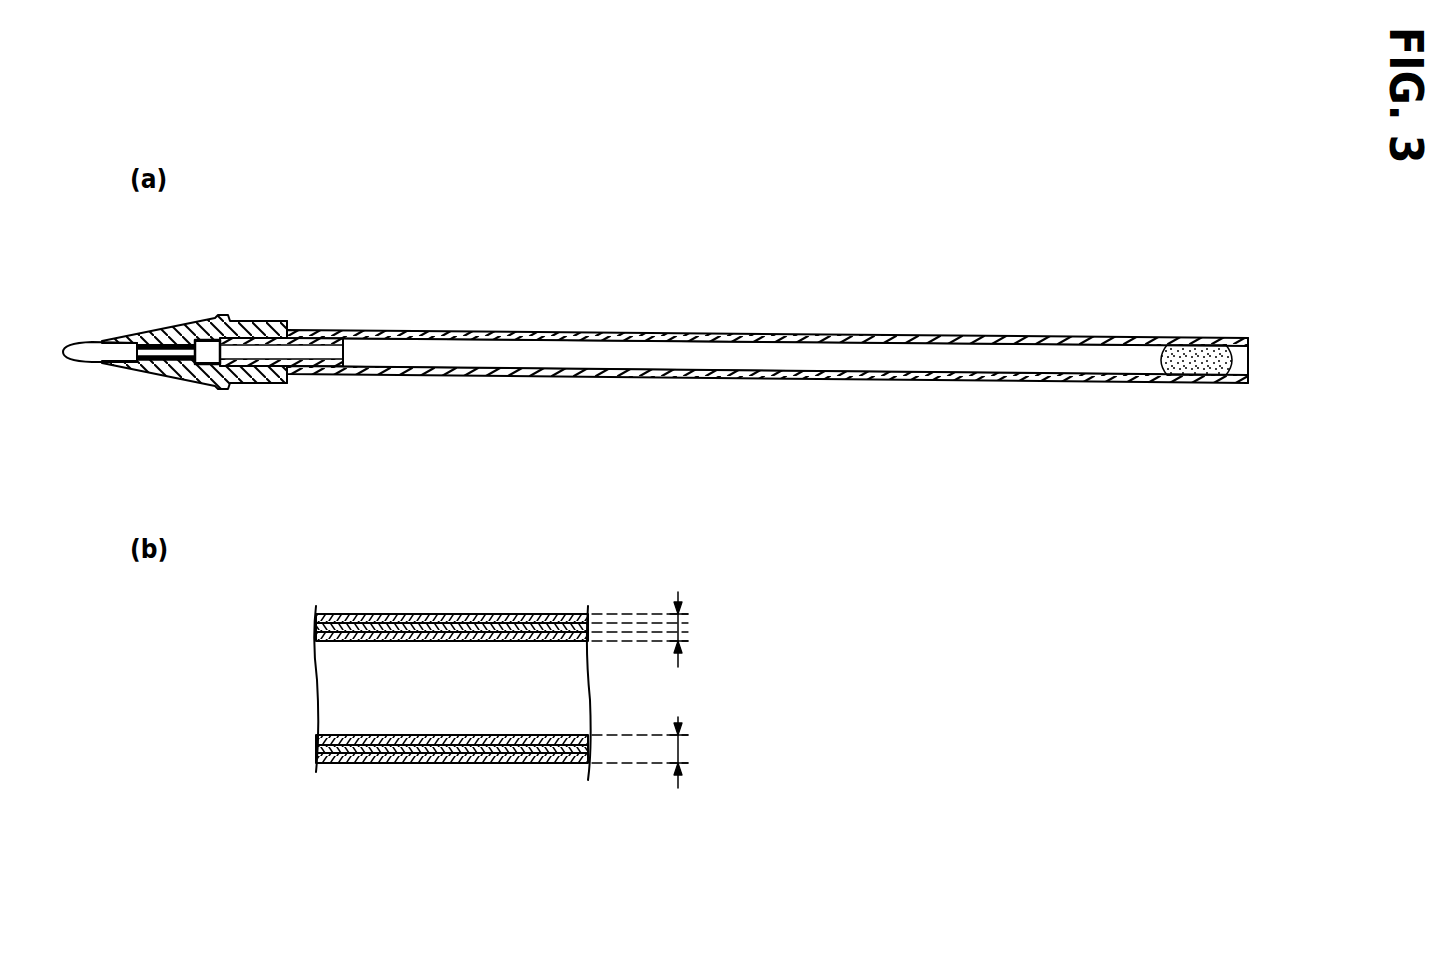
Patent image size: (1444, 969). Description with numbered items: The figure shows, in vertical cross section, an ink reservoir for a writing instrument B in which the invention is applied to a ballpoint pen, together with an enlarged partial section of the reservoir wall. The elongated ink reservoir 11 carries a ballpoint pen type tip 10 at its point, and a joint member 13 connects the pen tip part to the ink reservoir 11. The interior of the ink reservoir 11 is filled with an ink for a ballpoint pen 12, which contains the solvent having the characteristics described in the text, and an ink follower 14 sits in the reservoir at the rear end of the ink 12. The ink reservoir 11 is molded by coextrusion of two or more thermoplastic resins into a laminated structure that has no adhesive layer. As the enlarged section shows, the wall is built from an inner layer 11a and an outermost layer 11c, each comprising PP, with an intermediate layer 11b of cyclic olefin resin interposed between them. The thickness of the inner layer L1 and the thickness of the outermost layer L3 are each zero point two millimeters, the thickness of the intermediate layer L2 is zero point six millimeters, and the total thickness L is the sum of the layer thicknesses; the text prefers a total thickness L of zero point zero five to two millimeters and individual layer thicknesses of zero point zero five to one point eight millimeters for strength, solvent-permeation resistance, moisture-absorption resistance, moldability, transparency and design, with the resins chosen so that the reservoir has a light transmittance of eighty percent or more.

The ball-point pen refill B is at (746, 332).
The ballpoint pen type tip 10 is at (88, 352).
The ink reservoir 11 is at (862, 333).
The inner layer 11a is at (435, 627).
The intermediate layer 11b is at (487, 631).
The outermost layer 11c is at (548, 617).
The ink for a ballpoint pen 12 is at (958, 355).
The joint member 13 is at (180, 330).
The ink follower 14 is at (1197, 345).
The total thickness L is at (680, 749).
The thickness of inner layer L1 is at (680, 636).
The thickness of intermediate layer L2 is at (680, 628).
The thickness of outermost layer L3 is at (680, 621).